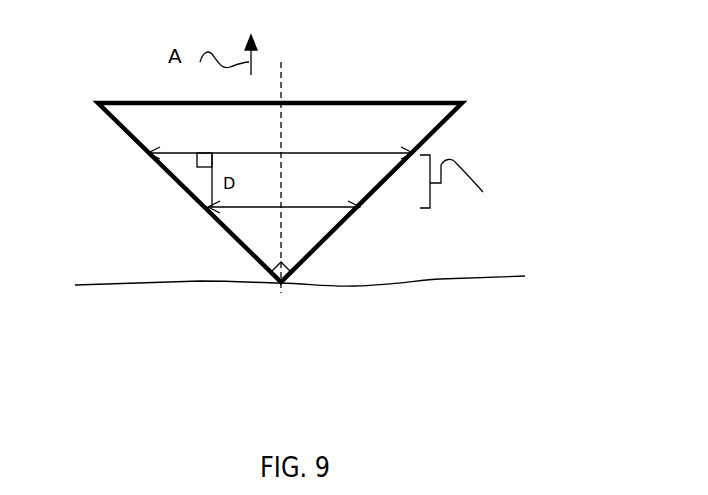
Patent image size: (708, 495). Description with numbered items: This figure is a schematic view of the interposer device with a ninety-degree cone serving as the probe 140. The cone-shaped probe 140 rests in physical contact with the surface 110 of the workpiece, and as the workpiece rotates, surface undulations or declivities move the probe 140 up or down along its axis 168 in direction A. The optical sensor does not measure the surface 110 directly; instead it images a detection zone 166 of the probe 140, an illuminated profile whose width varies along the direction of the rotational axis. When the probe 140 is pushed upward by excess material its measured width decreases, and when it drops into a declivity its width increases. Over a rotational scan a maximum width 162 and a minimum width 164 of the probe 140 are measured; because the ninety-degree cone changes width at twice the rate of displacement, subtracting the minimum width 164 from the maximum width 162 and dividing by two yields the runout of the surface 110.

The surface 110 is at (442, 279).
The probe 140 is at (463, 104).
The maximum width 162 is at (150, 153).
The minimum width 164 is at (210, 212).
The detection zone 166 is at (487, 187).
The axis 168 is at (282, 78).